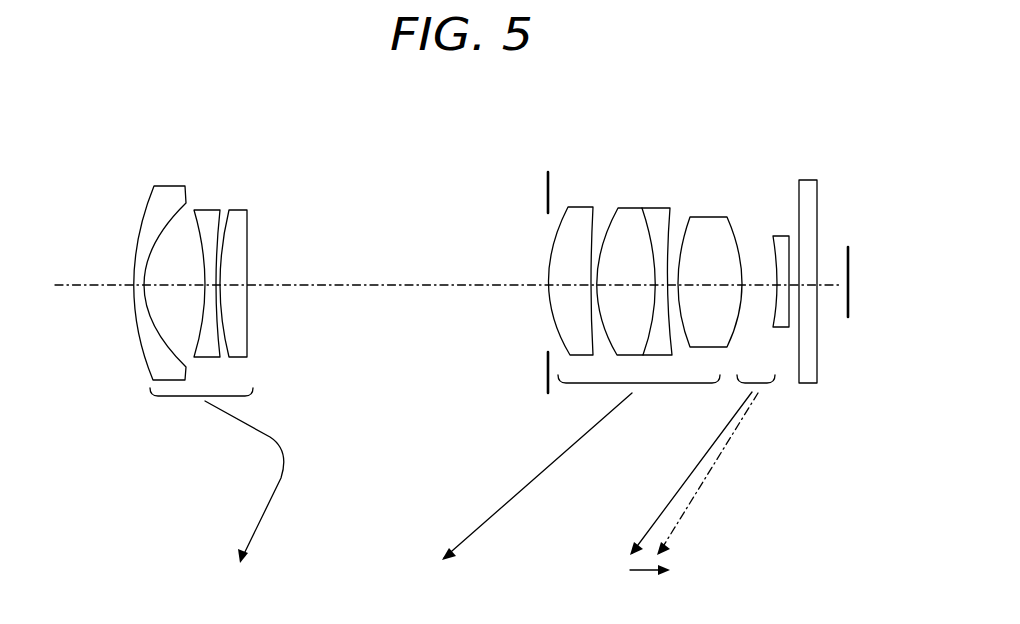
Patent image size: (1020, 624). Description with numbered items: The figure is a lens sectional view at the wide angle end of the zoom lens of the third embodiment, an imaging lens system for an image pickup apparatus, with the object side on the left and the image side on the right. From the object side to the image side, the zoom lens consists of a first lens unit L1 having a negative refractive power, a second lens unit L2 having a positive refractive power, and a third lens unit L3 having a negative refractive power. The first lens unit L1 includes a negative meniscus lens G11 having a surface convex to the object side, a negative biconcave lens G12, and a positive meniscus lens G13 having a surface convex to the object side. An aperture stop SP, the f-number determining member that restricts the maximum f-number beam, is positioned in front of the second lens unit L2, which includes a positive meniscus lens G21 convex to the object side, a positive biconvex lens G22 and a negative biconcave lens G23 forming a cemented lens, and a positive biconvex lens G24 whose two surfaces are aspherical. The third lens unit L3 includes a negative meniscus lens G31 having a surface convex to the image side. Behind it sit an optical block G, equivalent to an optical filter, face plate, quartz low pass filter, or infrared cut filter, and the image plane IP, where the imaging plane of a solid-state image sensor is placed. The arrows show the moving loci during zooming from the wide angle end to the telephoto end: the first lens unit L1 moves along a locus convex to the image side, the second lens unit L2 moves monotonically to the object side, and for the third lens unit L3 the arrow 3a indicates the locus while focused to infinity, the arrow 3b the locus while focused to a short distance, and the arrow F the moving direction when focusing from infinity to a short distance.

The first lens unit L1 is at (135, 115).
The second lens unit L2 is at (710, 111).
The third lens unit L3 is at (775, 111).
The optical block G is at (820, 111).
The aperture stop SP is at (548, 172).
The image plane IP is at (853, 250).
The negative meniscus lens G11 is at (165, 187).
The negative biconcave lens G12 is at (205, 210).
The positive meniscus lens G13 is at (237, 210).
The positive meniscus lens G21 is at (583, 207).
The positive biconvex lens G22 is at (627, 208).
The negative biconcave lens G23 is at (658, 208).
The positive biconvex lens G24 is at (710, 217).
The negative meniscus lens G31 is at (782, 236).
The arrow 3a is at (670, 498).
The arrow 3b is at (700, 487).
The arrow F is at (660, 571).